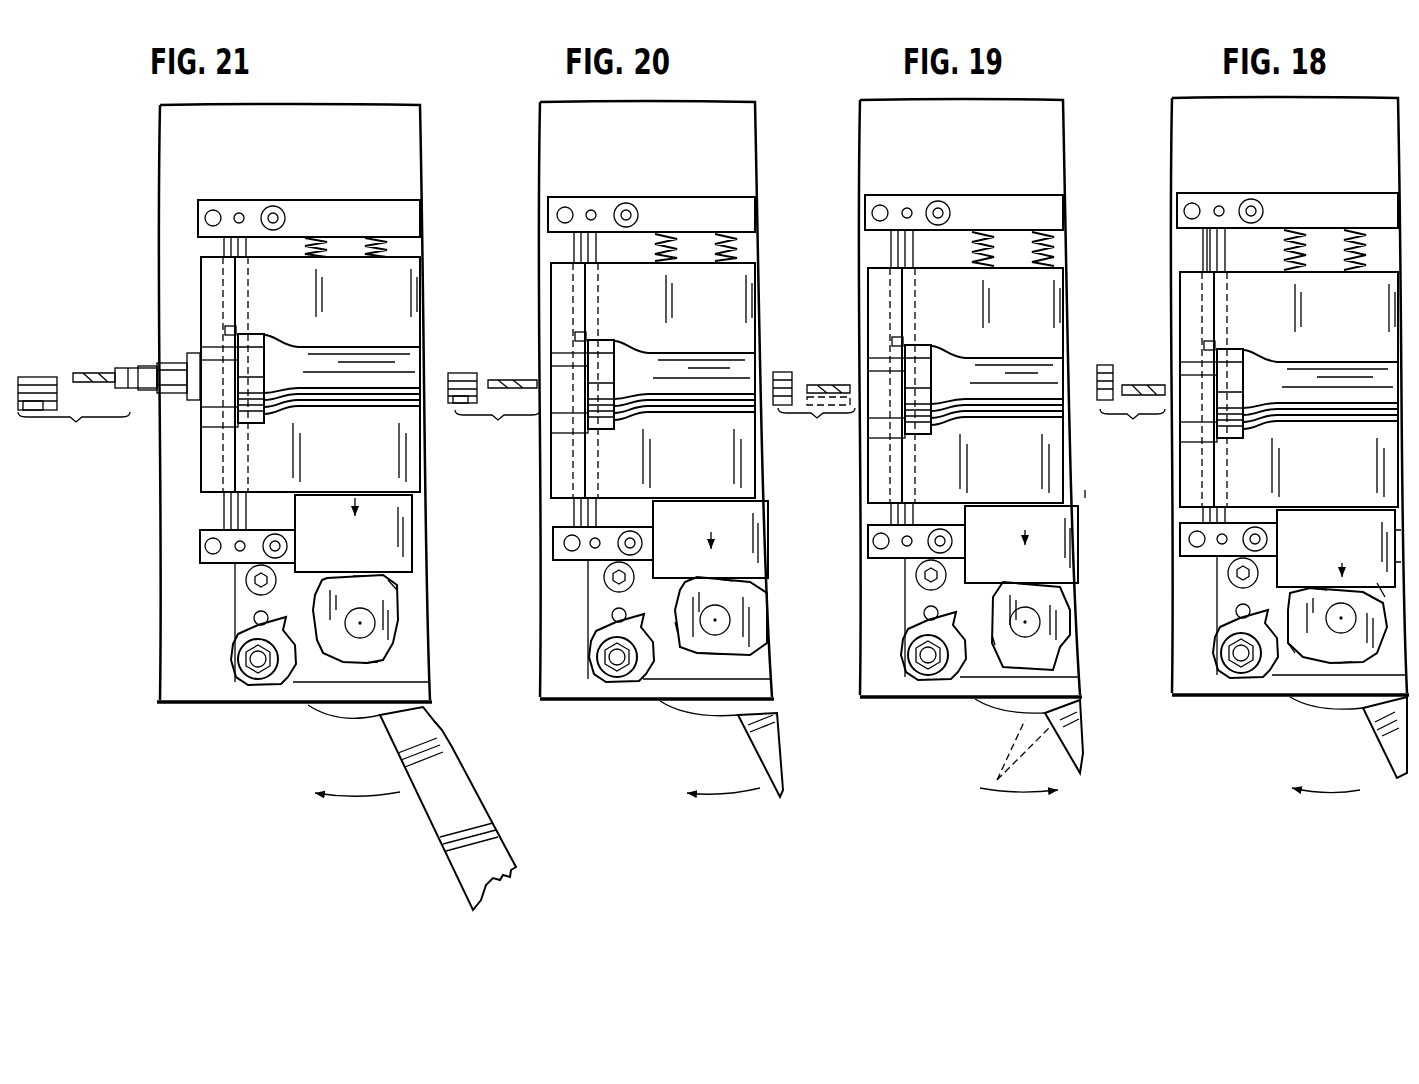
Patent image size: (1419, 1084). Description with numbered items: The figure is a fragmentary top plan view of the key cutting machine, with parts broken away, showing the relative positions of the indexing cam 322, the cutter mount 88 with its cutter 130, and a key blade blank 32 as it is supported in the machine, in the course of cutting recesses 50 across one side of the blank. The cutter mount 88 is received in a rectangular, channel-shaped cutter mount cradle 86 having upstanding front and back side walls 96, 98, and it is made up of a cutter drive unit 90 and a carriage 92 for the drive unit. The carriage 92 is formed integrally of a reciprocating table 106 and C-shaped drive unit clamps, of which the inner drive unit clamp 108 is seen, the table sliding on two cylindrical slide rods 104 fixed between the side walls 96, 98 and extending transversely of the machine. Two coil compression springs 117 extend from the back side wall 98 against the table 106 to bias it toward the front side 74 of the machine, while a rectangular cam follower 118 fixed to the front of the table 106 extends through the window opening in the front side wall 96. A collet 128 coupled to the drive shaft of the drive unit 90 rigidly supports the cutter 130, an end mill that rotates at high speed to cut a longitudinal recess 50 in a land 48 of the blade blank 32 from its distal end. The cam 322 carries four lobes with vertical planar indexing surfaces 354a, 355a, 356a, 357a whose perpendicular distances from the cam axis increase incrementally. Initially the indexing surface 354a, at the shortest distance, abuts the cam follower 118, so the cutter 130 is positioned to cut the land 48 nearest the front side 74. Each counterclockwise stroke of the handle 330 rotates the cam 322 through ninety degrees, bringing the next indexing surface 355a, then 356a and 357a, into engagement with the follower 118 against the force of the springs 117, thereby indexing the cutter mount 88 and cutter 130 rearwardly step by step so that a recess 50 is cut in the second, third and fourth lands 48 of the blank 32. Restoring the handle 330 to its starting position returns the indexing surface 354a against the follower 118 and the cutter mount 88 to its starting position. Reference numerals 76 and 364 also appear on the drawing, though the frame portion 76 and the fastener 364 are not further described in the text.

In FIG. 18, the blade blank 32 is at (1099, 347).
In FIG. 19, the blade blank 32 is at (783, 360).
In FIG. 20, the blade blank 32 is at (461, 359).
In FIG. 21, the blade blank 32 is at (37, 360).
In FIG. 18, the land 48 is at (1132, 425).
In FIG. 19, the longitudinal recess 50 is at (816, 433).
In FIG. 20, the longitudinal recess 50 is at (497, 438).
In FIG. 21, the longitudinal recess 50 is at (74, 437).
In FIG. 18, the front side 74 is at (1202, 658).
In FIG. 18, the frame plate 76 is at (1267, 375).
In FIG. 18, the cutter mount cradle 86 is at (1287, 179).
In FIG. 19, the cutter mount cradle 86 is at (964, 183).
In FIG. 20, the cutter mount cradle 86 is at (651, 182).
In FIG. 21, the cutter mount cradle 86 is at (309, 193).
In FIG. 18, the cutter mount 88 is at (1124, 518).
In FIG. 18, the cutter drive unit 90 is at (1307, 363).
In FIG. 19, the cutter drive unit 90 is at (984, 363).
In FIG. 20, the cutter drive unit 90 is at (671, 372).
In FIG. 21, the cutter drive unit 90 is at (329, 353).
In FIG. 18, the carriage 92 is at (1249, 386).
In FIG. 18, the front side wall 96 is at (1203, 552).
In FIG. 18, the back side wall 98 is at (1337, 184).
In FIG. 18, the slide rods 104 is at (1163, 238).
In FIG. 18, the reciprocating table 106 is at (1219, 210).
In FIG. 18, the inner drive unit clamp 108 is at (1250, 389).
In FIG. 18, the coil compression springs 117 is at (1325, 216).
In FIG. 19, the coil compression springs 117 is at (1013, 209).
In FIG. 20, the coil compression springs 117 is at (696, 207).
In FIG. 21, the coil compression springs 117 is at (346, 208).
In FIG. 18, the cam follower 118 is at (1339, 520).
In FIG. 19, the cam follower 118 is at (1021, 521).
In FIG. 20, the cam follower 118 is at (710, 515).
In FIG. 21, the cam follower 118 is at (353, 510).
In FIG. 21, the collet 128 is at (157, 355).
In FIG. 18, the cutter 130 is at (1142, 359).
In FIG. 19, the cutter 130 is at (827, 390).
In FIG. 20, the cutter 130 is at (512, 354).
In FIG. 21, the cutter 130 is at (91, 351).
In FIG. 18, the indexing cam 322 is at (1283, 625).
In FIG. 19, the indexing cam 322 is at (1066, 626).
In FIG. 20, the indexing cam 322 is at (758, 616).
In FIG. 21, the indexing cam 322 is at (401, 619).
In FIG. 18, the handle 330 is at (1348, 769).
In FIG. 19, the handle 330 is at (1017, 770).
In FIG. 20, the handle 330 is at (720, 749).
In FIG. 21, the handle 330 is at (437, 807).
In FIG. 18, the indexing surface 354a is at (1307, 566).
In FIG. 19, the indexing surface 354a is at (967, 615).
In FIG. 20, the indexing surface 354a is at (676, 698).
In FIG. 21, the indexing surface 354a is at (440, 591).
In FIG. 18, the indexing surface 355a is at (1361, 558).
In FIG. 19, the indexing surface 355a is at (1002, 551).
In FIG. 20, the indexing surface 355a is at (653, 609).
In FIG. 21, the indexing surface 355a is at (431, 657).
In FIG. 18, the indexing surface 356a is at (1328, 709).
In FIG. 19, the indexing surface 356a is at (1109, 611).
In FIG. 20, the indexing surface 356a is at (695, 560).
In FIG. 21, the indexing surface 356a is at (290, 696).
In FIG. 18, the indexing surface 357a is at (1262, 701).
In FIG. 20, the indexing surface 357a is at (800, 593).
In FIG. 21, the indexing surface 357a is at (337, 551).
In FIG. 18, the pivot bolt 364 is at (1202, 646).